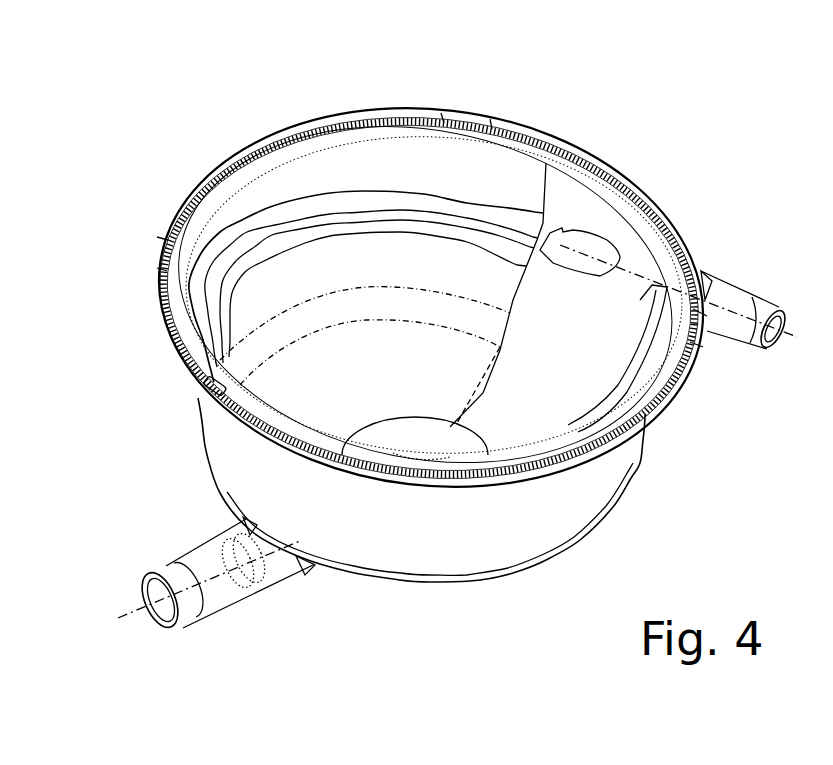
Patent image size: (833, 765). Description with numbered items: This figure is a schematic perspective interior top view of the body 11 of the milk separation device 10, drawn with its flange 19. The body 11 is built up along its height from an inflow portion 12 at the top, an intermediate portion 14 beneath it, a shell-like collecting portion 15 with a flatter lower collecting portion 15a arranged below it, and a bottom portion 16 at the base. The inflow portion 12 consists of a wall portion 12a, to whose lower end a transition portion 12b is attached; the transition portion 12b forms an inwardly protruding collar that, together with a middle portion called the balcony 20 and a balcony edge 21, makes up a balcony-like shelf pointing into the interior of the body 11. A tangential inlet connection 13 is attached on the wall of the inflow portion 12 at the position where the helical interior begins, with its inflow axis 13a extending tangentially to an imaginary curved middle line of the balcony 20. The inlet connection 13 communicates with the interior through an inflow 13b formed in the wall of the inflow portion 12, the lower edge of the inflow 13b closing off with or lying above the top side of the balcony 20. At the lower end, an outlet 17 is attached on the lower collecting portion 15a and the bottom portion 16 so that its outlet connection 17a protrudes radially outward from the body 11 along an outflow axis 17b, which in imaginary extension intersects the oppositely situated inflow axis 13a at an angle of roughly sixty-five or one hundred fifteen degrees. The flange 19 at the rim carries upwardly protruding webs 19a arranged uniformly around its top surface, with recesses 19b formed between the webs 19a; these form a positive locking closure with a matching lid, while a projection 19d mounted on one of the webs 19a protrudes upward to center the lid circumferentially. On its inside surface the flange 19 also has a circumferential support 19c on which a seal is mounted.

The milk separation device 10 is at (218, 117).
The body 11 is at (642, 473).
The inflow portion 12 is at (282, 160).
The wall portion 12a is at (340, 176).
The transition portion 12b is at (395, 198).
The inlet connection 13 is at (737, 297).
The inflow axis 13a is at (793, 340).
The inflow 13b is at (570, 233).
The intermediate portion 14 is at (410, 437).
The collecting portion 15 is at (395, 308).
The lower collecting portion 15a is at (445, 360).
The bottom portion 16 is at (320, 270).
The outlet 17 is at (310, 567).
The outlet connection 17a is at (190, 568).
The outflow axis 17b is at (133, 612).
The flange 19 is at (626, 169).
The webs 19a is at (580, 150).
The recesses 19b is at (468, 118).
The circumferential support 19c is at (210, 195).
The projection 19d is at (205, 384).
The balcony 20 is at (485, 231).
The balcony edge 21 is at (445, 236).